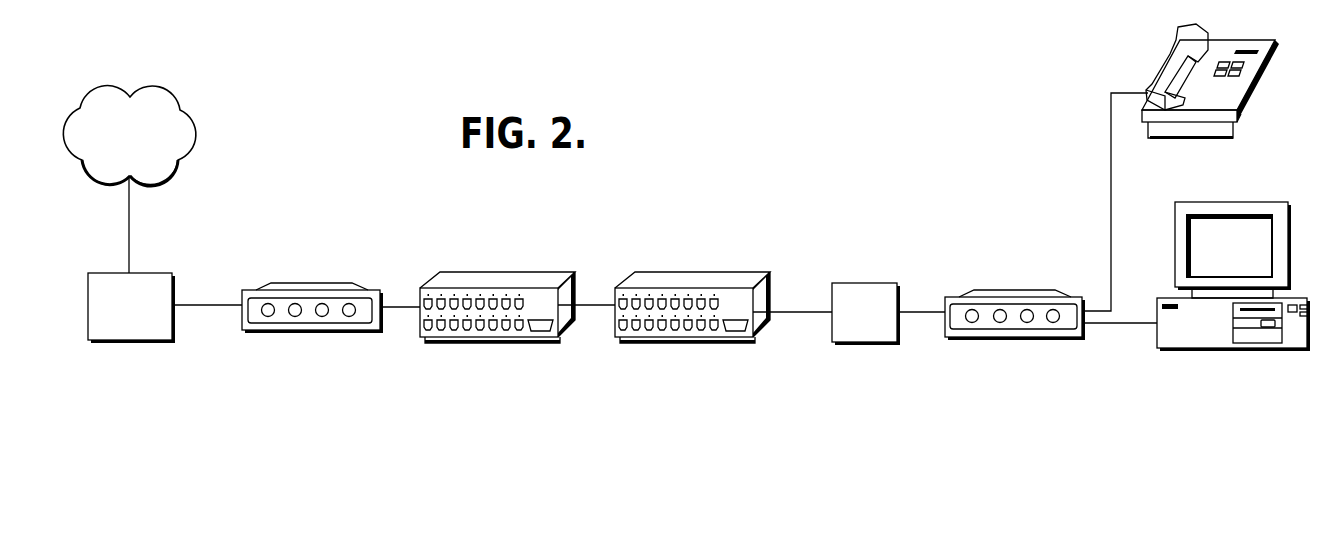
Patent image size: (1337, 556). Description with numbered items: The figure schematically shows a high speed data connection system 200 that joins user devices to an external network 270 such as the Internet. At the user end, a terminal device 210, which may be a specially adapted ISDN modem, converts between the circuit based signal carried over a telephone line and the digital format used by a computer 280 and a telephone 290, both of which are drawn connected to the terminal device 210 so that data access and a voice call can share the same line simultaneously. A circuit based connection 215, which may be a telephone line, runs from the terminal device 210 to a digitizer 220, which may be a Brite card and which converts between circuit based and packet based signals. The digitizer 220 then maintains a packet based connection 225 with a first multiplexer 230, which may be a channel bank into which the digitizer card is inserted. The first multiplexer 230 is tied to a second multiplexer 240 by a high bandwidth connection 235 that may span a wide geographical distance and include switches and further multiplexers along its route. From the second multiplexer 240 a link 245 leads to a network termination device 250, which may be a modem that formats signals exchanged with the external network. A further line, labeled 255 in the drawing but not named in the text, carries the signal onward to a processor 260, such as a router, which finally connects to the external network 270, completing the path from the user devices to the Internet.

The high speed data connection system 200 is at (786, 214).
The terminal device 210 is at (985, 292).
The circuit based connection 215 is at (913, 310).
The digitizer 220 is at (878, 283).
The packet based connection 225 is at (815, 313).
The first multiplexer 230 is at (700, 272).
The high bandwidth connection 235 is at (588, 303).
The second multiplexer 240 is at (483, 274).
The link 245 is at (400, 307).
The network termination device 250 is at (326, 335).
The connection 255 is at (197, 305).
The processor 260 is at (88, 290).
The external network 270 is at (150, 84).
The computer 280 is at (1288, 202).
The telephone 290 is at (1218, 37).